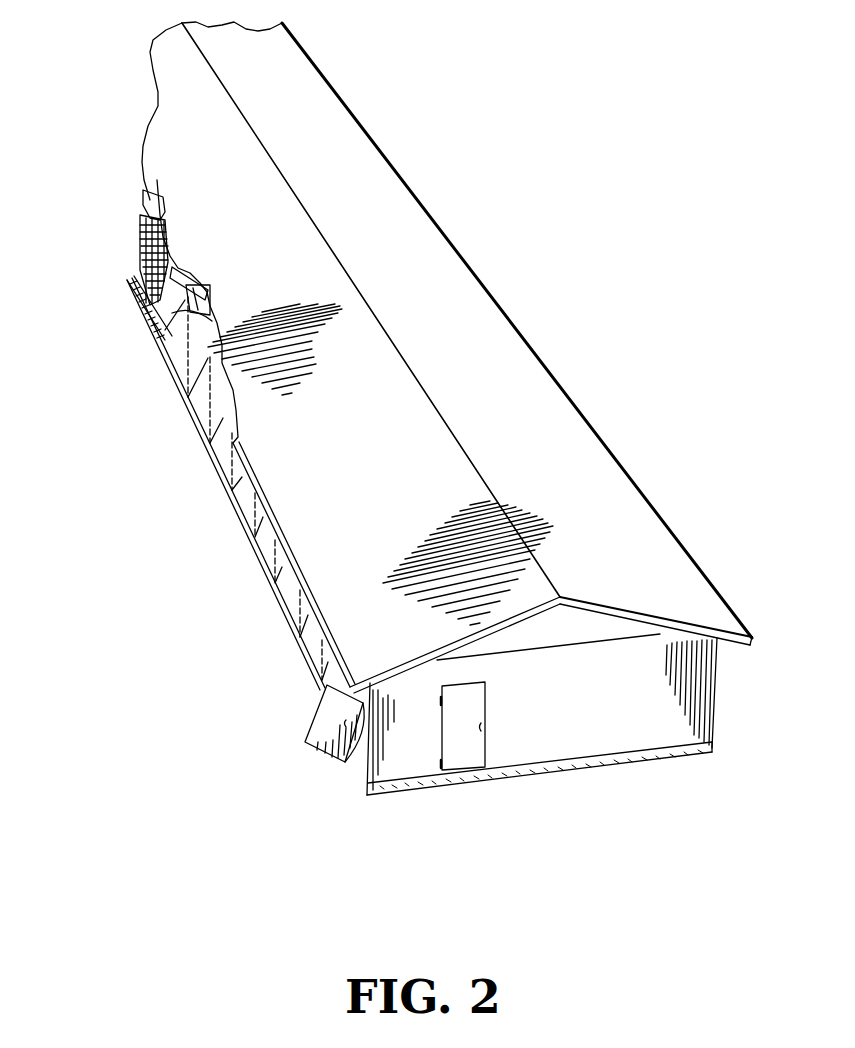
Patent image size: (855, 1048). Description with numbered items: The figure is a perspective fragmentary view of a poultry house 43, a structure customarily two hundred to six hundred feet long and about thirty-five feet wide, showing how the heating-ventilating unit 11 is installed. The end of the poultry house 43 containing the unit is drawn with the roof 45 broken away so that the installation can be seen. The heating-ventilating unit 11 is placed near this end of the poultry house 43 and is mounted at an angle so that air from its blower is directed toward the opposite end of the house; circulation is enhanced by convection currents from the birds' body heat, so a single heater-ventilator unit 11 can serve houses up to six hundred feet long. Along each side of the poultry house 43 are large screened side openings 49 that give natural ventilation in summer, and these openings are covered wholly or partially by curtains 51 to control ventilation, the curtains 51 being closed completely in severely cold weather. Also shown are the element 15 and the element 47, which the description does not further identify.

The heating-ventilating unit 11 is at (328, 676).
The air handling unit 15 is at (303, 723).
The poultry house 43 is at (462, 249).
The roof 45 is at (210, 337).
The plate member 47 is at (138, 275).
The screened side openings 49 is at (138, 240).
The curtains 51 is at (172, 313).